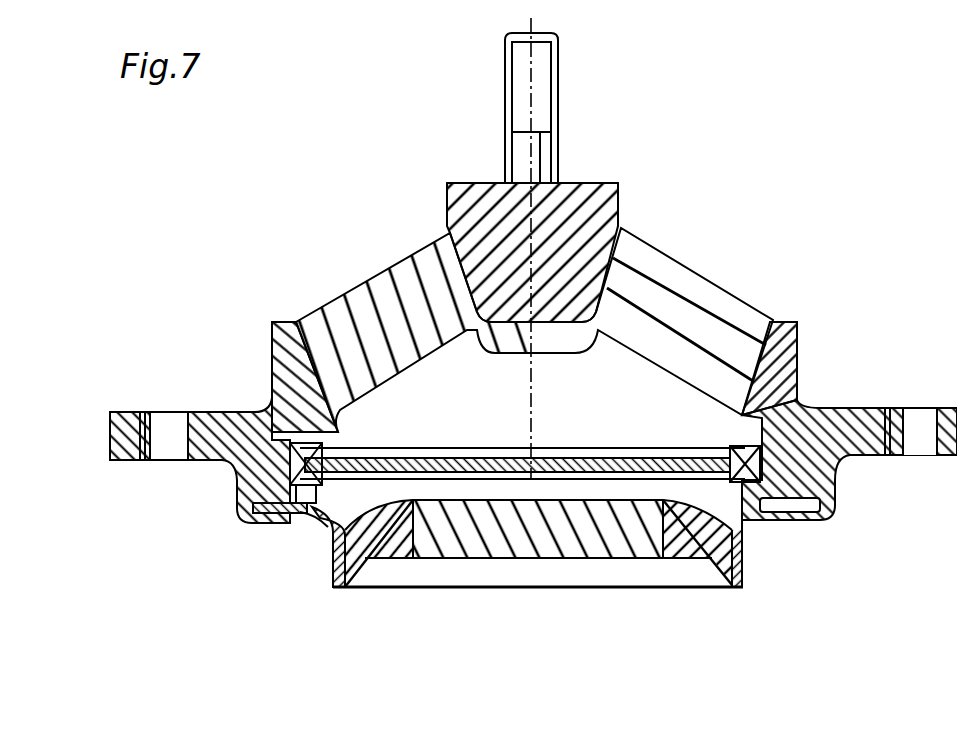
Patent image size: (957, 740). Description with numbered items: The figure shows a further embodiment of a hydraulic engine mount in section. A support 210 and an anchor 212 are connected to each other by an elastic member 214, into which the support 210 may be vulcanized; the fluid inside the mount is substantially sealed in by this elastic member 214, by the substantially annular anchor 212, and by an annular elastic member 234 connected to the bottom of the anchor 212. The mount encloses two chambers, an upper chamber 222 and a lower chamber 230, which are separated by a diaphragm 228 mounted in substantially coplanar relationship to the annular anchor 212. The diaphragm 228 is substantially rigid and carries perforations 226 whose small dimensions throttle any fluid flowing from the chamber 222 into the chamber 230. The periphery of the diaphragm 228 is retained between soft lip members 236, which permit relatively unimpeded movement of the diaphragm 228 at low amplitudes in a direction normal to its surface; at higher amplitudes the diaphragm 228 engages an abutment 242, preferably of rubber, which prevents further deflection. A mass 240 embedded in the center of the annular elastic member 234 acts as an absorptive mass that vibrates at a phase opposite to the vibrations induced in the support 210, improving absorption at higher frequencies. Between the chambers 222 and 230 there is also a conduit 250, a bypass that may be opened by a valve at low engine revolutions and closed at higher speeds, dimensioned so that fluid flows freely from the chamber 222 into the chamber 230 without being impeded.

The support 210 is at (585, 190).
The anchor 212 is at (858, 460).
The elastic member 214 is at (425, 275).
The chamber 222 is at (455, 362).
The perforations 226 is at (475, 455).
The diaphragm 228 is at (318, 520).
The chamber 230 is at (437, 490).
The annular elastic member 234 is at (380, 547).
The soft lip members 236 is at (270, 523).
The mass 240 is at (478, 545).
The abutment 242 is at (236, 472).
The conduit 250 is at (790, 508).